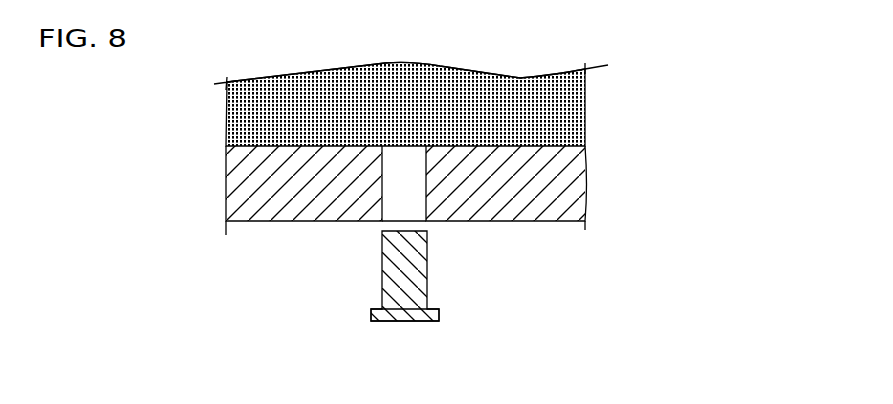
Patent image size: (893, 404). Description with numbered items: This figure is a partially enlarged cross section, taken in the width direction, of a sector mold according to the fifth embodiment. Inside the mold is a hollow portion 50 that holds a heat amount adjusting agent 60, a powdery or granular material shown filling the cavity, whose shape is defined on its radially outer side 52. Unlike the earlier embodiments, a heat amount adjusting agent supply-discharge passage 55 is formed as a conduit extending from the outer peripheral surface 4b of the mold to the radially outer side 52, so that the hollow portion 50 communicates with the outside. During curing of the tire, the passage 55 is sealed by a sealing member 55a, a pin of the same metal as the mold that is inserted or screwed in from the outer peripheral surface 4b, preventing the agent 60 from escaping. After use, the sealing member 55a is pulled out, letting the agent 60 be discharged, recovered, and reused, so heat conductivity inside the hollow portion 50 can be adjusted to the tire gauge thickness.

The heat amount adjusting agent 60 is at (422, 97).
The radially outer side 52 is at (483, 140).
The hollow portion 50 is at (584, 108).
The outer peripheral surface 4b is at (302, 222).
The heat amount adjusting agent supply-discharge passage 55 is at (405, 183).
The sealing member 55a is at (410, 300).